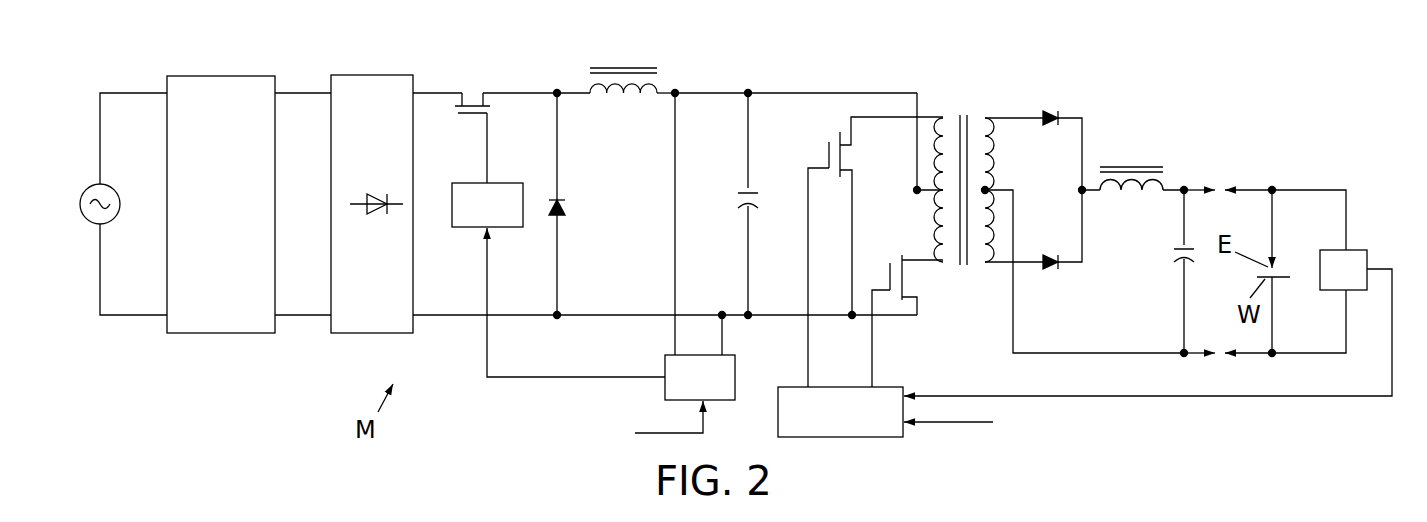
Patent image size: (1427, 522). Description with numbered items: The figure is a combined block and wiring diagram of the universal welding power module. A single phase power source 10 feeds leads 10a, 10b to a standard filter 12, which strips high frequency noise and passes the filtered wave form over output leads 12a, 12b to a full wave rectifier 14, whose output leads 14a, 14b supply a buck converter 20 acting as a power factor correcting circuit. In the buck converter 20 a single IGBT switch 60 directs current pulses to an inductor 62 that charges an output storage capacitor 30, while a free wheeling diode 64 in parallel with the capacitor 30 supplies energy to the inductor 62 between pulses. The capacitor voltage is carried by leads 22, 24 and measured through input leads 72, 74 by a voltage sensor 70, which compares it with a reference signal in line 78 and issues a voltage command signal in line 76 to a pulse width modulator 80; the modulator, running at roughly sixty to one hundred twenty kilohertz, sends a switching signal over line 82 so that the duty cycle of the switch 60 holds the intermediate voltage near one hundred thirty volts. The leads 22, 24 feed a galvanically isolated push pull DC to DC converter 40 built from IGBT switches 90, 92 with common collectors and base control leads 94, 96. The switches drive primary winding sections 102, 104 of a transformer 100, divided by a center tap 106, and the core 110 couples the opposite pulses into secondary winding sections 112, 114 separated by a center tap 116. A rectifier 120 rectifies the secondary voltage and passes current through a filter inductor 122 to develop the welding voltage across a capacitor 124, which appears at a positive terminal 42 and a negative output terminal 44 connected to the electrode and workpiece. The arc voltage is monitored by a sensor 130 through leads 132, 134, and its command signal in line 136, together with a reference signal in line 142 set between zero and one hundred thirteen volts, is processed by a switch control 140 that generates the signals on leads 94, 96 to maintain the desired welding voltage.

The single phase power source 10 is at (87, 220).
The lead 10a is at (122, 97).
The lead 10b is at (115, 315).
The filter 12 is at (207, 74).
The output lead 12a is at (290, 88).
The output lead 12b is at (302, 318).
The full wave rectifier 14 is at (364, 73).
The output lead 14a is at (428, 86).
The output lead 14b is at (445, 318).
The buck converter 20 is at (546, 80).
The lead 22 is at (778, 88).
The lead 24 is at (785, 315).
The output storage capacitor 30 is at (733, 198).
The push pull DC to DC converter 40 is at (993, 189).
The positive terminal 42 is at (1197, 187).
The negative output terminal 44 is at (1195, 355).
The switch 60 is at (491, 110).
The inductor 62 is at (630, 63).
The free wheeling diode 64 is at (568, 203).
The voltage sensor 70 is at (663, 355).
The input lead 72 is at (673, 247).
The input lead 74 is at (722, 338).
The line 76 is at (507, 377).
The line 78 is at (707, 427).
The pulse width modulator 80 is at (460, 228).
The line 82 is at (487, 150).
The switch 90 is at (833, 133).
The switch 92 is at (899, 255).
The base control lead 94 is at (806, 225).
The base control lead 96 is at (872, 338).
The transformer 100 is at (967, 270).
The primary winding section 102 is at (940, 130).
The primary winding section 104 is at (942, 262).
The center tap 106 is at (916, 160).
The core 110 is at (1026, 171).
The secondary winding section 112 is at (992, 167).
The secondary winding section 114 is at (992, 242).
The center tap 116 is at (1015, 202).
The rectifier 120 is at (1063, 102).
The filter inductor 122 is at (1132, 163).
The capacitor 124 is at (1172, 253).
The sensor 130 is at (1357, 250).
The lead 132 is at (1317, 187).
The lead 134 is at (1305, 353).
The line 136 is at (1280, 397).
The switch control 140 is at (885, 387).
The line 142 is at (952, 422).